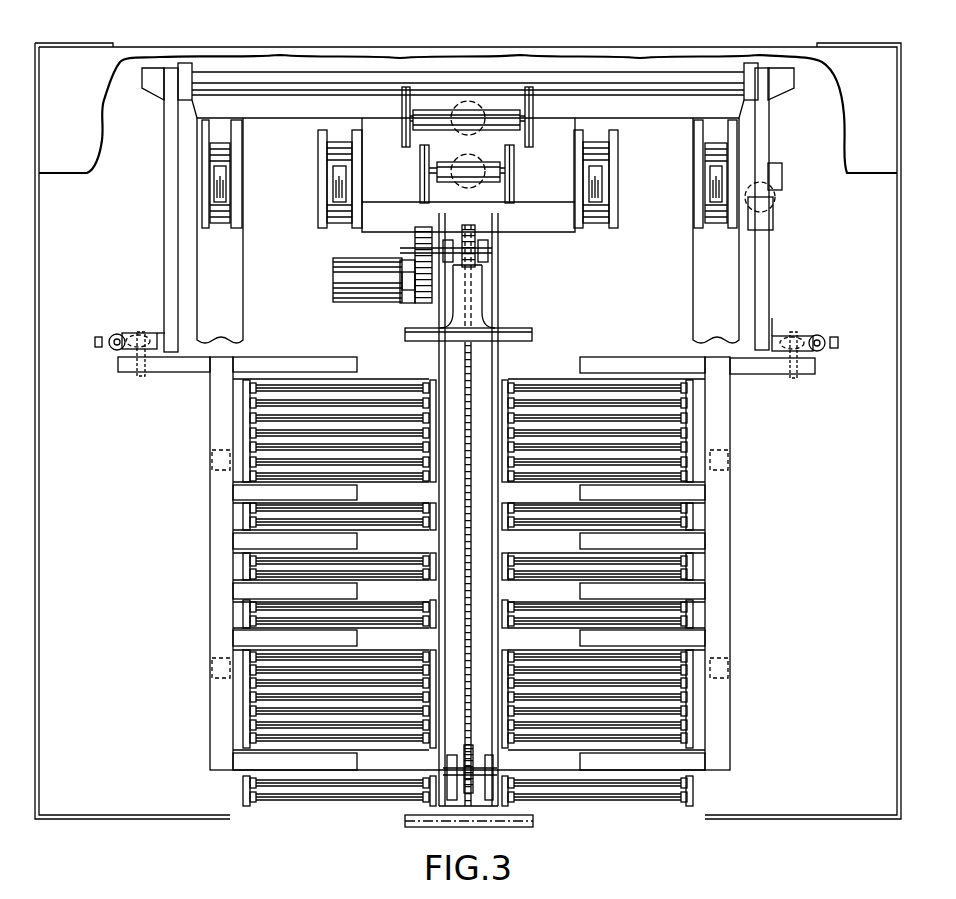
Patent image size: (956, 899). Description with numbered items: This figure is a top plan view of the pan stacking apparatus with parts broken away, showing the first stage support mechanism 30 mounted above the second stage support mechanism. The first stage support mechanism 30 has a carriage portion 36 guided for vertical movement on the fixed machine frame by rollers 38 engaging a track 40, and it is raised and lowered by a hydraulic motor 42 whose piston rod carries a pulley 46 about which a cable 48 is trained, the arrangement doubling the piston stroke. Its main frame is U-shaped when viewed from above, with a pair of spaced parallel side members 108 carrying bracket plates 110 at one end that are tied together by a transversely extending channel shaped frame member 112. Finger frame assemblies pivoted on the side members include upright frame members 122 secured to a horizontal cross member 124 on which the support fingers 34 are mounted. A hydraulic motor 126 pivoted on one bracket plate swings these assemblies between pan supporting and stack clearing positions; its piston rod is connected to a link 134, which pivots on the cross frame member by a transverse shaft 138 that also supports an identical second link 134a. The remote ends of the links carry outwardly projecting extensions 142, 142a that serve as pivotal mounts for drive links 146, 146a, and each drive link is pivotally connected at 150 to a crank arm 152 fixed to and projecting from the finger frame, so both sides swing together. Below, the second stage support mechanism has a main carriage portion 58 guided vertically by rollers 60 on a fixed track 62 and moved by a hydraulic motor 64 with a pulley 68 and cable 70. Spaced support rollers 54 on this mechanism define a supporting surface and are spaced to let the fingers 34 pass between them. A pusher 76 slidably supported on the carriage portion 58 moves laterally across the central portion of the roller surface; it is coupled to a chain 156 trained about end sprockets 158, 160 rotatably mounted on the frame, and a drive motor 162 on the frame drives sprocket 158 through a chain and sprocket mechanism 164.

The first stage support mechanism 30 is at (756, 387).
The support fingers 34 is at (353, 363).
The carriage portion 36 is at (649, 112).
The rollers 38 is at (217, 146).
The track 40 is at (225, 187).
The hydraulic motor 42 is at (468, 101).
The pulley 46 is at (530, 87).
The cable 48 is at (403, 128).
The support rollers 54 is at (250, 452).
The main carriage portion 58 is at (513, 250).
The rollers 60 is at (335, 140).
The fixed track 62 is at (335, 177).
The hydraulic motor 64 is at (476, 154).
The pulley 68 is at (425, 185).
The cable 70 is at (425, 172).
The pusher 76 is at (512, 340).
The side members 108 is at (232, 283).
The bracket plates 110 is at (197, 148).
The channel shaped frame member 112 is at (612, 102).
The upright frame members 122 is at (725, 468).
The cross member 124 is at (213, 545).
The hydraulic motor 126 is at (776, 196).
The link 134 is at (766, 255).
The second link 134a is at (172, 260).
The shaft 138 is at (352, 72).
The extension 142 is at (788, 332).
The extension 142a is at (157, 327).
The drive link 146 is at (815, 337).
The drive link 146a is at (117, 333).
The pivotal connection 150 is at (143, 372).
The crank arm 152 is at (173, 365).
The chain 156 is at (463, 377).
The drive sprocket 158 is at (476, 225).
The end sprocket 160 is at (485, 792).
The drive motor 162 is at (388, 292).
The chain and sprocket mechanism 164 is at (419, 236).